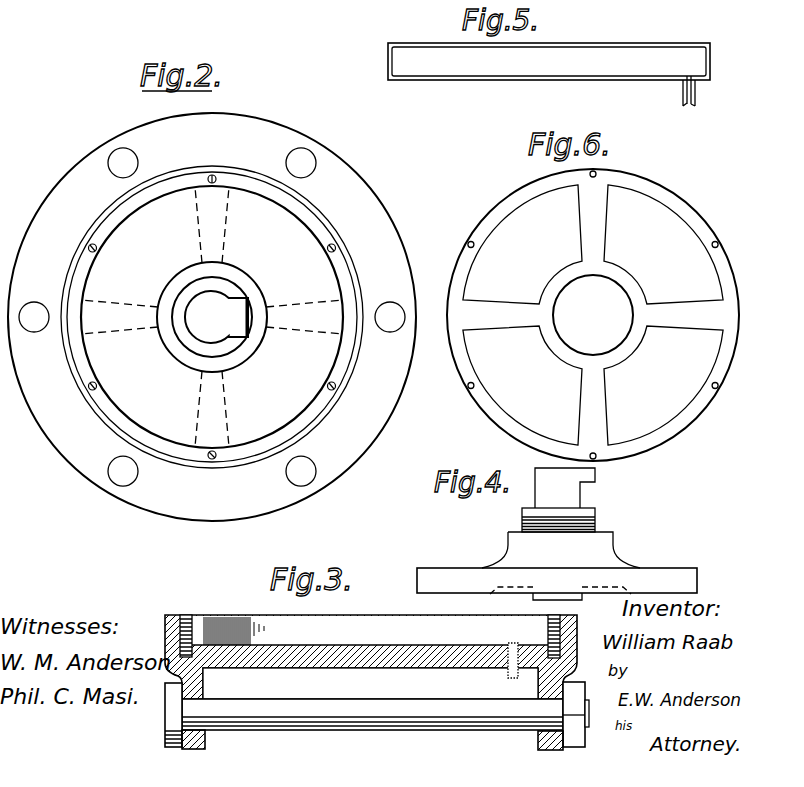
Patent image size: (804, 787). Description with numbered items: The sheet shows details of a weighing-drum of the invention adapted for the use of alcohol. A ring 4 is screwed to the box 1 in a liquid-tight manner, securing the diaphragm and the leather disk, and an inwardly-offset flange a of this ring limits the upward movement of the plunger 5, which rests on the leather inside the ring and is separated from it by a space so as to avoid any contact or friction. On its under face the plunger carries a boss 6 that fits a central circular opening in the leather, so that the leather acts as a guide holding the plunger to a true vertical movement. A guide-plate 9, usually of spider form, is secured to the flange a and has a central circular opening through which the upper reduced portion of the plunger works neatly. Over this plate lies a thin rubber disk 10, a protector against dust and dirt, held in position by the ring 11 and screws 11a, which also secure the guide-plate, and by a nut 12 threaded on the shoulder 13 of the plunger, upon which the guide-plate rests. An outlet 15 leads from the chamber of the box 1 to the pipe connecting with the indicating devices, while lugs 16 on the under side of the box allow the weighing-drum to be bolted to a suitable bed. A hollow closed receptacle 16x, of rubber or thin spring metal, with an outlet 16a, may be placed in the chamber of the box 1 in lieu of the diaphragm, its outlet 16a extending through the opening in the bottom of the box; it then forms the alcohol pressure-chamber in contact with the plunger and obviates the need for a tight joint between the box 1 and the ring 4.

In FIG. 3, the box 1 is at (378, 657).
In FIG. 2, the ring 4 is at (305, 337).
In FIG. 4, the plunger 5 is at (557, 555).
In FIG. 4, the boss 6 is at (583, 600).
In FIG. 6, the guide-plate 9 is at (593, 315).
In FIG. 2, the disk 10 is at (212, 317).
In FIG. 2, the ring 11 is at (293, 209).
In FIG. 2, the screws 11a is at (97, 249).
In FIG. 2, the nut 12 is at (254, 293).
In FIG. 4, the shoulder 13 is at (527, 515).
In FIG. 3, the outlet 15 is at (516, 643).
In FIG. 3, the lugs 16 is at (205, 686).
In FIG. 5, the outlet 16a is at (684, 89).
In FIG. 5, the hollow closed receptacle 16x is at (549, 50).
In FIG. 2, the inwardly-offset flange a is at (325, 217).